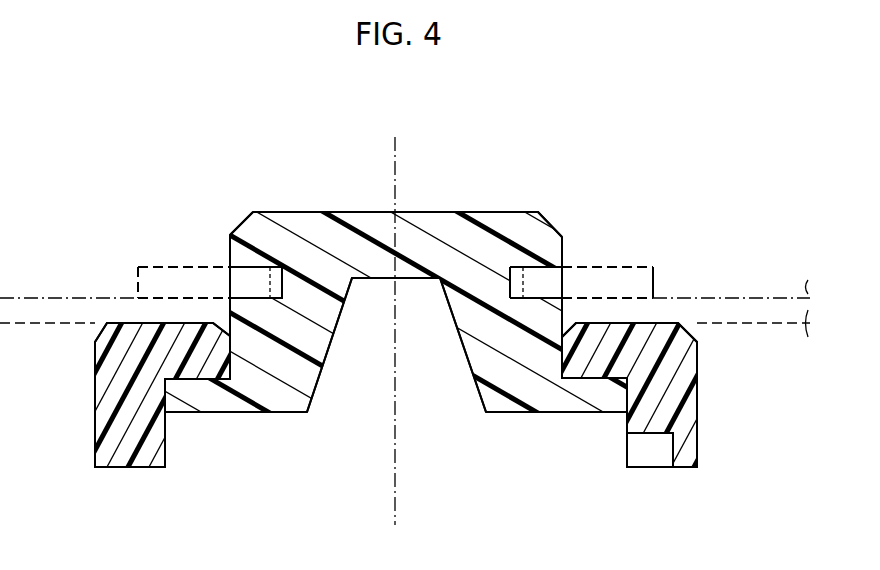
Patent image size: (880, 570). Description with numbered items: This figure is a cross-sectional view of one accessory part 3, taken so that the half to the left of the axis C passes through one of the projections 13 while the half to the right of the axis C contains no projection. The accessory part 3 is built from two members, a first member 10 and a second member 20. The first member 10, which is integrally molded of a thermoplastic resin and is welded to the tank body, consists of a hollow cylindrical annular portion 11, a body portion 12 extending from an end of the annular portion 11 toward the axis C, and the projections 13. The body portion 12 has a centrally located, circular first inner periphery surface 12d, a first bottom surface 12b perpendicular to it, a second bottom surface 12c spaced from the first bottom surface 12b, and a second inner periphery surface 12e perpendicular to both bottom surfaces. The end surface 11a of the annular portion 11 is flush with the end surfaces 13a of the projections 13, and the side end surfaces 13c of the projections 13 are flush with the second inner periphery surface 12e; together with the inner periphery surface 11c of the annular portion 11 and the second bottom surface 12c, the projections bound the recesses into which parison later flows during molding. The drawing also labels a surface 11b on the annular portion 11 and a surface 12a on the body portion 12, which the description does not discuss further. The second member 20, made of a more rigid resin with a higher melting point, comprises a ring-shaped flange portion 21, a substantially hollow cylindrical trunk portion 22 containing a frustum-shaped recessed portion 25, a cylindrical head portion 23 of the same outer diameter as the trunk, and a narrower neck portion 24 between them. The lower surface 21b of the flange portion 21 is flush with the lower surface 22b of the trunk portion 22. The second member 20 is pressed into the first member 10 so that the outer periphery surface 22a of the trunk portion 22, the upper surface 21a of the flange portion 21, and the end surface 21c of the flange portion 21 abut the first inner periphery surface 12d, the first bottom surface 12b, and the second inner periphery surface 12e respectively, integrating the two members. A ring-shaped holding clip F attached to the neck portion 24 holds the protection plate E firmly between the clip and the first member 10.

The accessory part 3 is at (619, 170).
The first member 10 is at (704, 364).
The annular portion 11 is at (95, 415).
The end surface of the annular portion 11a is at (107, 468).
The outer side surface of flange portion 11b is at (95, 445).
The inner periphery surface of the annular portion 11c is at (670, 466).
The body portion 12 is at (673, 361).
The top surface of second flange portion 12a is at (650, 322).
The first bottom surface 12b is at (545, 413).
The second bottom surface 12c is at (665, 448).
The first inner periphery surface 12d is at (230, 353).
The second inner periphery surface 12e is at (627, 445).
The projections 13 is at (162, 470).
The end surfaces of the projections 13a is at (142, 470).
The side end surfaces of the projections 13c is at (167, 450).
The second member 20 is at (512, 208).
The flange portion 21 is at (203, 398).
The upper surface of the flange portion 21a is at (182, 376).
The lower surface of the flange portion 21b is at (187, 413).
The end surface of the flange portion 21c is at (165, 403).
The trunk portion 22 is at (303, 340).
The outer periphery surface of the trunk portion 22a is at (229, 306).
The lower surface of the trunk portion 22b is at (290, 413).
The head portion 23 is at (308, 235).
The neck portion 24 is at (262, 288).
The recessed portion 25 is at (372, 312).
The axis C is at (397, 162).
The protection plate E is at (777, 298).
The holding clip F is at (646, 265).